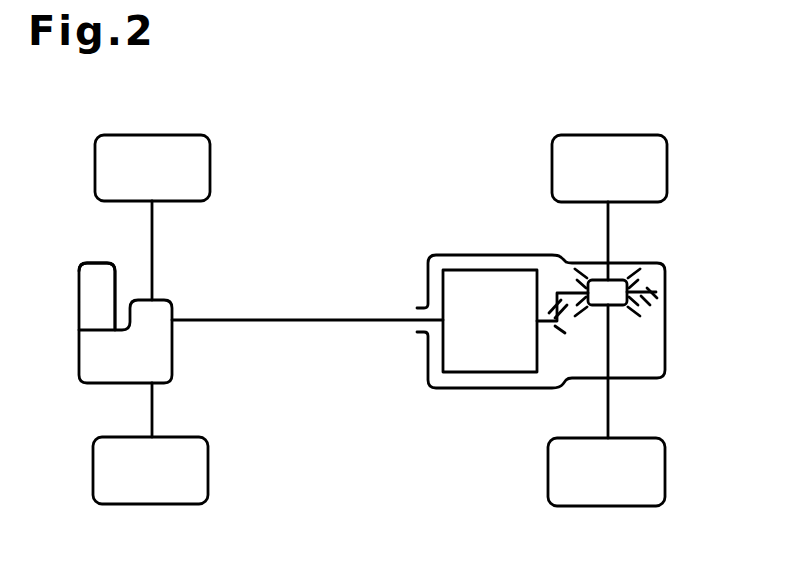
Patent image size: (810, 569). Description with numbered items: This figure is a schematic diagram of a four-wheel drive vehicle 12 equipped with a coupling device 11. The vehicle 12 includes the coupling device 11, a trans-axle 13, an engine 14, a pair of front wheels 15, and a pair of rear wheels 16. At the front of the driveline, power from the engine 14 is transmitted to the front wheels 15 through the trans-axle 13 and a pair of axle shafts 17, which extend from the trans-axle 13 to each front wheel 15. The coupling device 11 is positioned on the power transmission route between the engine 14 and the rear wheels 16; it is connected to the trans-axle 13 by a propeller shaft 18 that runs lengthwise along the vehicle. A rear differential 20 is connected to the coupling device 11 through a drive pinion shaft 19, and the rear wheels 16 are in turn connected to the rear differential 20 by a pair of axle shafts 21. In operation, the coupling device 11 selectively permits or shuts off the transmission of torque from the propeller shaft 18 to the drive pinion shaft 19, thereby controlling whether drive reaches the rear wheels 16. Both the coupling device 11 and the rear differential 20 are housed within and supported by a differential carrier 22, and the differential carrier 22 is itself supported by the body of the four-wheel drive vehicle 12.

The coupling device 11 is at (500, 268).
The four-wheel drive vehicle 12 is at (413, 118).
The trans-axle 13 is at (79, 355).
The engine 14 is at (79, 302).
The front wheels 15 is at (210, 171).
The rear wheels 16 is at (667, 170).
The axle shafts 17 is at (152, 253).
The propeller shaft 18 is at (313, 320).
The drive pinion shaft 19 is at (543, 323).
The rear differential 20 is at (637, 315).
The axle shafts 21 is at (608, 233).
The differential carrier 22 is at (447, 254).